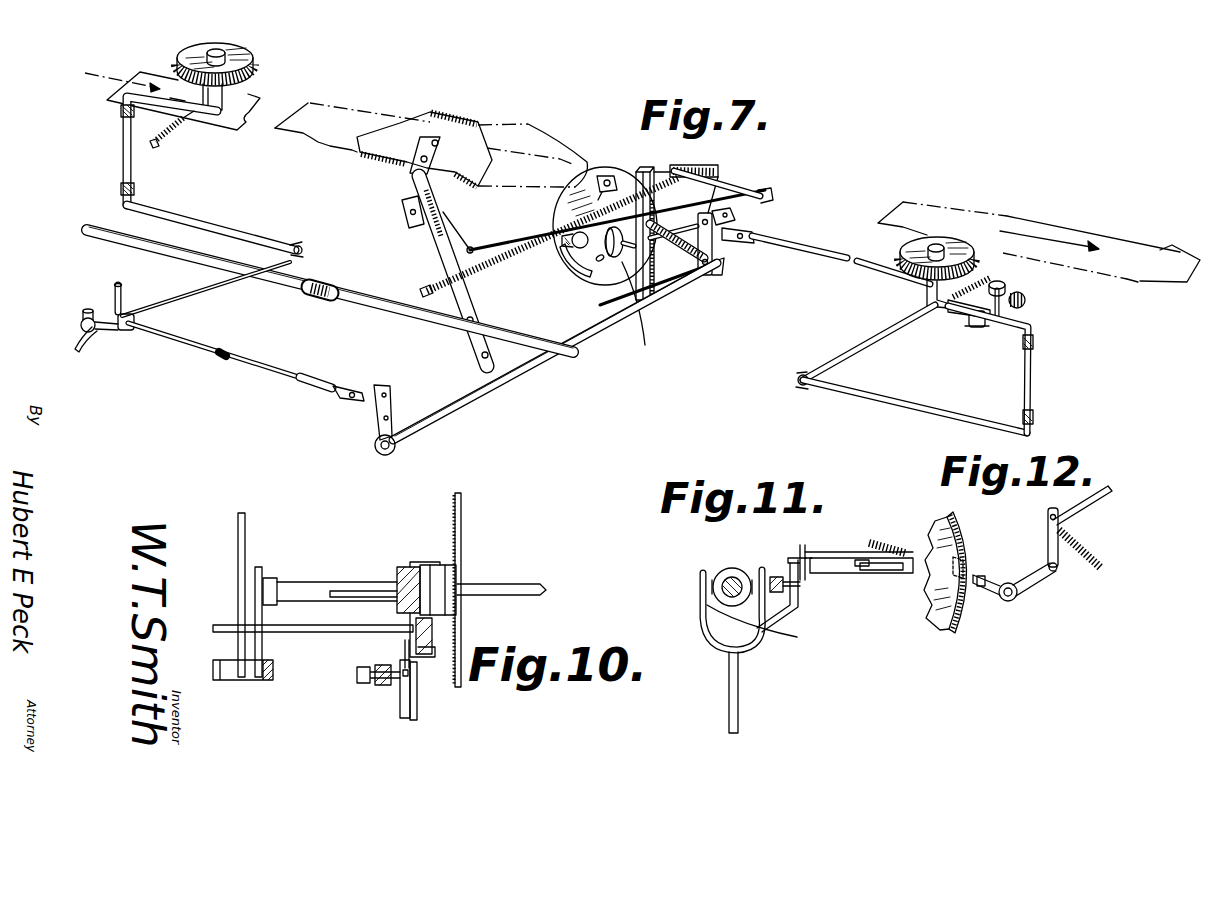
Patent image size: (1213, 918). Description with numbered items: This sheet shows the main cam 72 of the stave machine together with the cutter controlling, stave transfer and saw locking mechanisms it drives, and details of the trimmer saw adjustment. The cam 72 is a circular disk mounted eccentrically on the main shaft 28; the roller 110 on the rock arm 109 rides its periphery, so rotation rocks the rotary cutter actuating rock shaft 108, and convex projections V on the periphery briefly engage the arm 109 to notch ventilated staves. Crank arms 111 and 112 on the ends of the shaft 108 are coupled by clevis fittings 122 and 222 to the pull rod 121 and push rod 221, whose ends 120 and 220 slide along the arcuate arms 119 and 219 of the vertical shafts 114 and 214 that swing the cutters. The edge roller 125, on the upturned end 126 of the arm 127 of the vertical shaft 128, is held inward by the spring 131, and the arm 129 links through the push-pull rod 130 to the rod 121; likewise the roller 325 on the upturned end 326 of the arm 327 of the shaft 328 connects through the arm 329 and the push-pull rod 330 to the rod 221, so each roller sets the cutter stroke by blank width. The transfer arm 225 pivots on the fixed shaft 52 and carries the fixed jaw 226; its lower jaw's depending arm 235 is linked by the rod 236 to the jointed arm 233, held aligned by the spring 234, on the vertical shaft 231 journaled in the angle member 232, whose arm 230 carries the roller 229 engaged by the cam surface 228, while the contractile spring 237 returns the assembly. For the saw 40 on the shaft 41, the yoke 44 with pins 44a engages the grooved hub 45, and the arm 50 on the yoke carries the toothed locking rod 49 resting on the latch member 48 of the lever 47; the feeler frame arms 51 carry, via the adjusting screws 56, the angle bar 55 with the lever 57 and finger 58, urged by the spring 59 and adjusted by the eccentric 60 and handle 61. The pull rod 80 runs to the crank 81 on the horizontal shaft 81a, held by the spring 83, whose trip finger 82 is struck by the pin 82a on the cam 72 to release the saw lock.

In FIG. 7, the edge roller 125 is at (240, 56).
In FIG. 7, the upturned end 126 is at (222, 98).
In FIG. 7, the horizontal arm 127 is at (170, 97).
In FIG. 7, the vertical shaft 128 is at (125, 157).
In FIG. 7, the horizontally disposed arm 129 is at (214, 233).
In FIG. 7, the coiled contractile spring 131 is at (171, 132).
In FIG. 7, the push-pull rod 130 is at (190, 293).
In FIG. 7, the fixed shaft or rod 52 is at (313, 294).
In FIG. 7, the end of pull rod 120 is at (84, 320).
In FIG. 7, the arcuate arm 119 is at (88, 341).
In FIG. 7, the vertical shaft 114 is at (124, 307).
In FIG. 7, the pull rod 121 is at (277, 371).
In FIG. 7, the universal coupling or clevis fitting 122 is at (361, 390).
In FIG. 7, the crank arm 111 is at (400, 402).
In FIG. 7, the rotary cutter actuating rock shaft 108 is at (488, 395).
In FIG. 7, the fixed jaw 226 is at (473, 141).
In FIG. 7, the transfer arm 225 is at (442, 258).
In FIG. 7, the depending arm 235 is at (461, 234).
In FIG. 7, the rod 236 is at (516, 249).
In FIG. 7, the coiled contractile spring 237 is at (503, 277).
In FIG. 7, the cam surface 228 is at (590, 292).
In FIG. 7, the convex projections V is at (567, 277).
In FIG. 7, the main shaft 28 is at (576, 236).
In FIG. 7, the lug or pin 82a is at (597, 265).
In FIG. 12, the lug or pin 82a is at (1006, 509).
In FIG. 7, the main cam 72 is at (645, 316).
In FIG. 12, the main cam 72 is at (966, 613).
In FIG. 7, the roller 110 is at (608, 183).
In FIG. 7, the roller 229 is at (641, 296).
In FIG. 7, the vertical shaft 231 is at (662, 180).
In FIG. 7, the jointed arm 233 is at (700, 166).
In FIG. 7, the spring 234 is at (717, 172).
In FIG. 7, the rock arm 109 is at (719, 253).
In FIG. 7, the crank arm 112 is at (722, 217).
In FIG. 7, the universal coupling or clevis fitting 222 is at (746, 226).
In FIG. 7, the push rod 221 is at (813, 250).
In FIG. 7, the fixed angle member 232 is at (700, 270).
In FIG. 7, the arm 230 is at (679, 231).
In FIG. 7, the edge roller 325 is at (954, 246).
In FIG. 7, the upturned end 326 is at (930, 289).
In FIG. 7, the upper end arm 327 is at (952, 304).
In FIG. 7, the end of push rod 220 is at (1004, 303).
In FIG. 7, the arcuate arm 219 is at (1024, 302).
In FIG. 7, the vertical shaft 214 is at (976, 323).
In FIG. 7, the push-pull rod 330 is at (888, 332).
In FIG. 7, the horizontally disposed arm 329 is at (923, 388).
In FIG. 7, the vertical shaft 328 is at (1031, 371).
In FIG. 10, the pull rod 80 is at (246, 543).
In FIG. 12, the pull rod 80 is at (1090, 497).
In FIG. 10, the saw 40 is at (462, 540).
In FIG. 10, the latch member 48 is at (255, 617).
In FIG. 10, the shaft 41 is at (522, 585).
In FIG. 11, the shaft 41 is at (742, 578).
In FIG. 10, the pins 44a is at (420, 575).
In FIG. 11, the pins 44a is at (750, 630).
In FIG. 10, the yoke 44 is at (422, 570).
In FIG. 11, the yoke 44 is at (703, 622).
In FIG. 10, the grooved hub 45 is at (447, 562).
In FIG. 11, the grooved hub 45 is at (727, 571).
In FIG. 10, the arm 50 is at (433, 645).
In FIG. 11, the arm 50 is at (799, 604).
In FIG. 10, the finger 58 is at (404, 648).
In FIG. 11, the finger 58 is at (803, 553).
In FIG. 10, the toothed locking rod 49 is at (303, 632).
In FIG. 10, the lever 47 is at (252, 685).
In FIG. 10, the lever 57 is at (411, 700).
In FIG. 11, the lever 57 is at (831, 551).
In FIG. 10, the angle bar 55 is at (420, 720).
In FIG. 11, the angle bar 55 is at (844, 564).
In FIG. 10, the adjusting screws 56 is at (360, 681).
In FIG. 10, the vertical arms 51 is at (381, 686).
In FIG. 11, the adjusting cam or eccentric 60 is at (893, 572).
In FIG. 11, the operating handle 61 is at (867, 567).
In FIG. 11, the spring 59 is at (892, 547).
In FIG. 12, the trip finger 82 is at (988, 580).
In FIG. 12, the horizontal shaft 81a is at (1030, 582).
In FIG. 12, the crank 81 is at (1048, 534).
In FIG. 12, the spring 83 is at (1100, 565).